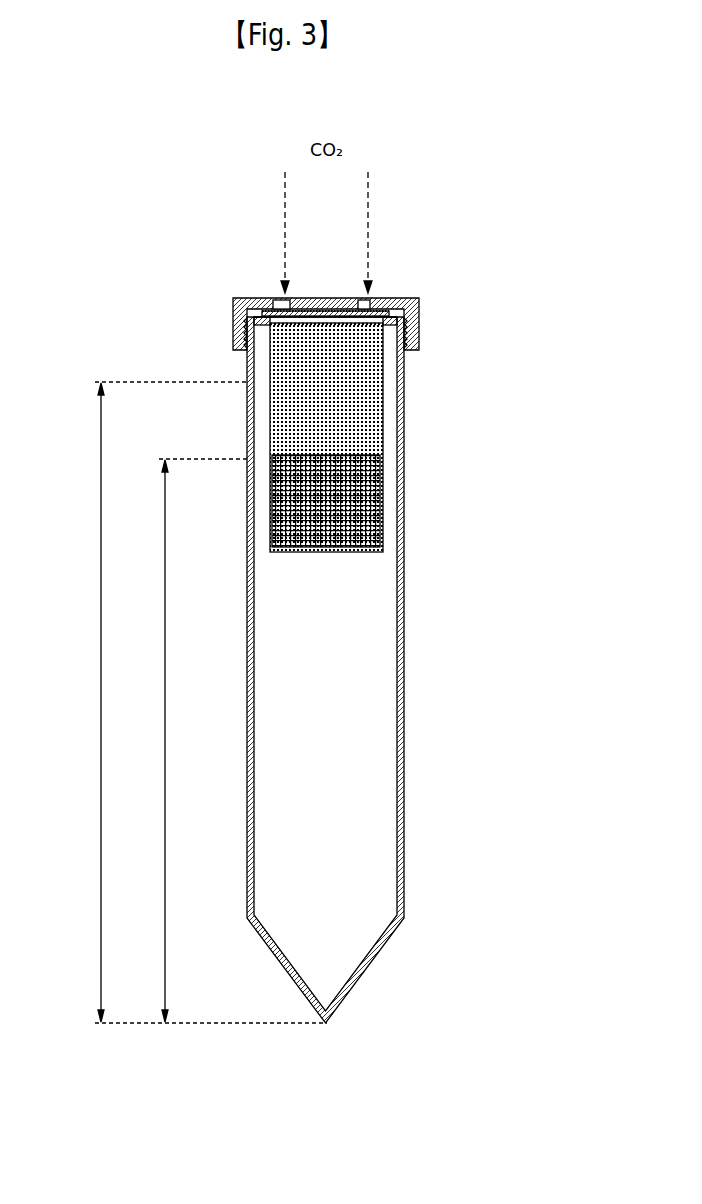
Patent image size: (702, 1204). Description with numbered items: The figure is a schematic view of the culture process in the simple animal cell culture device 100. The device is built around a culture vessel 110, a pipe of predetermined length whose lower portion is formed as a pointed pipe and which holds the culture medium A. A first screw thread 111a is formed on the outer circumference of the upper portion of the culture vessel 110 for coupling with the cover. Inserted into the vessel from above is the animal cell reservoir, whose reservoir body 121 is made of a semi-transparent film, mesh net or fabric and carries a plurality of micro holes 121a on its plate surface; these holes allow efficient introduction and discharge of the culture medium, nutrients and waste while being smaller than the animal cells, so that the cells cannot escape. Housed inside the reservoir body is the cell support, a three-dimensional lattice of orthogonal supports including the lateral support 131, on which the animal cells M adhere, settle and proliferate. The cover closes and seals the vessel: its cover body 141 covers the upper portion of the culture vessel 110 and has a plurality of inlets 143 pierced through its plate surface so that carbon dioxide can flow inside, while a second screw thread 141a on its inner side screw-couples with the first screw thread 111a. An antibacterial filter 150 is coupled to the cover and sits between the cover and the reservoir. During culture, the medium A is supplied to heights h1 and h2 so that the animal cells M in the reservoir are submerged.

The simple animal cell culture device 100 is at (503, 236).
The culture vessel 110 is at (404, 828).
The first screw thread 111a is at (405, 332).
The reservoir body 121 is at (377, 438).
The micro holes 121a is at (376, 383).
The lateral support 131 is at (378, 485).
The animal cells M is at (378, 533).
The culture medium A is at (358, 718).
The cover body 141 is at (315, 303).
The second screw thread 141a is at (233, 334).
The inlets 143 is at (277, 305).
The antibacterial filter 150 is at (387, 298).
The medium height h1 is at (189, 740).
The medium height h2 is at (157, 702).